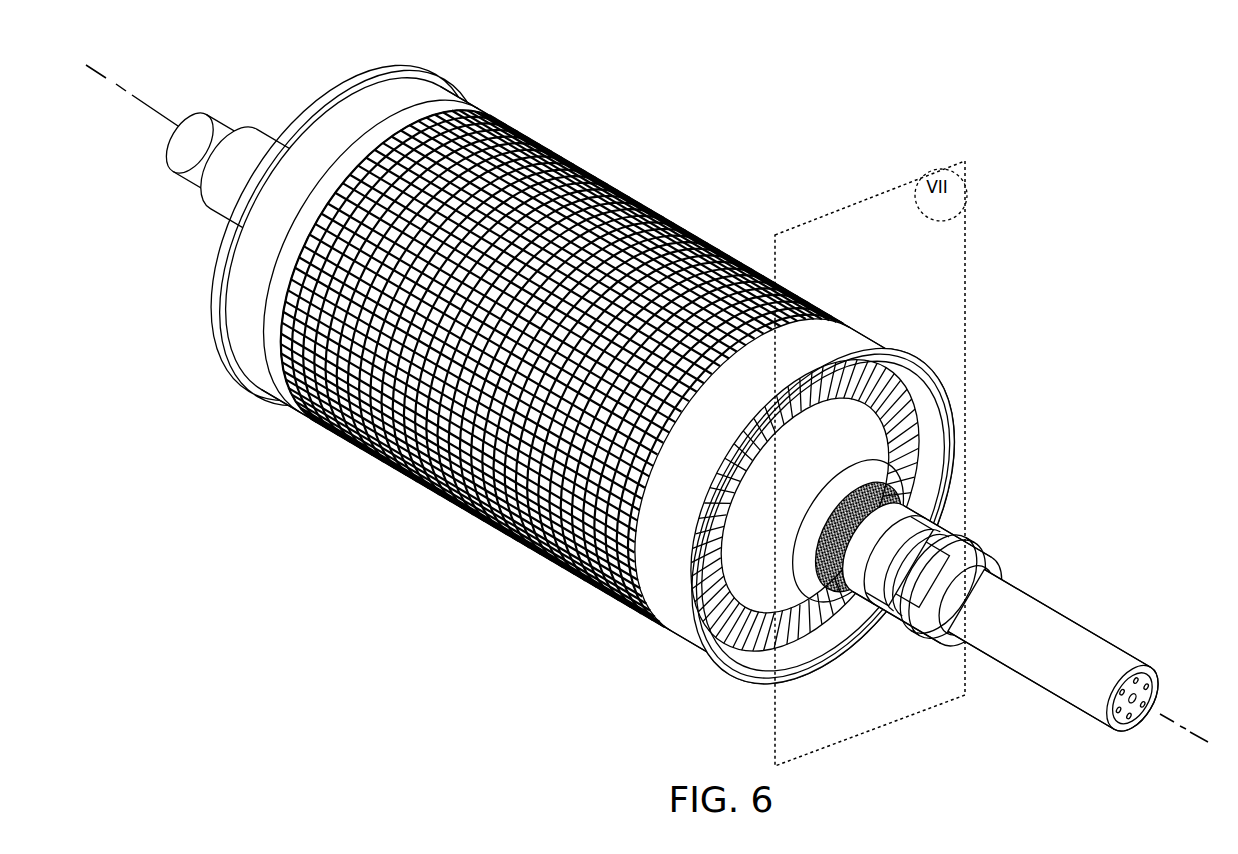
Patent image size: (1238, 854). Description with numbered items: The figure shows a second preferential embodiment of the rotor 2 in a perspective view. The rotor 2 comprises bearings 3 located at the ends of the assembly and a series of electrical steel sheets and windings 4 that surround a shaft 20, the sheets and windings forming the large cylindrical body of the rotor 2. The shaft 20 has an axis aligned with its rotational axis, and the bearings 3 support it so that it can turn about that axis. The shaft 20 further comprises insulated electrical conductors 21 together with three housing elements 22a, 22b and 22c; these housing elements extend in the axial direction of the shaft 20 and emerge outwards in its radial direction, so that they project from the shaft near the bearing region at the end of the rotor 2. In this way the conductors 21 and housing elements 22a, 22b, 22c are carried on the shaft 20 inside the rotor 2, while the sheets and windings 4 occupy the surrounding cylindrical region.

The rotor 2 is at (708, 120).
The bearings 3 is at (254, 128).
The electrical steel sheets and windings 4 is at (674, 212).
The shaft 20 is at (1070, 690).
The insulated electrical conductors 21 is at (982, 538).
The housing element 22a is at (874, 601).
The housing element 22b is at (896, 598).
The housing element 22c is at (968, 522).